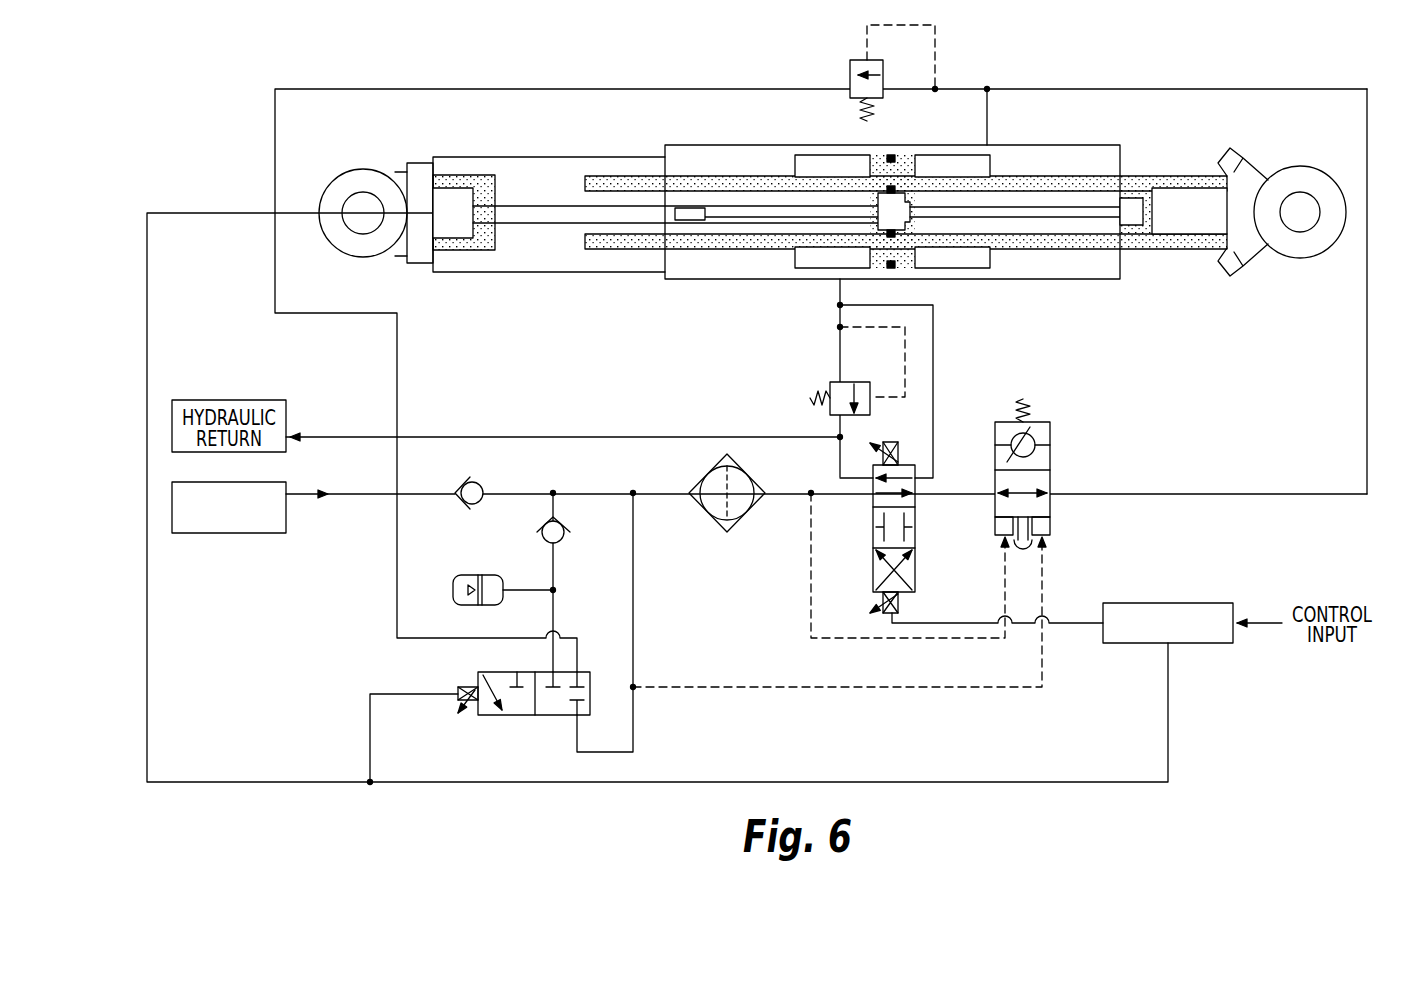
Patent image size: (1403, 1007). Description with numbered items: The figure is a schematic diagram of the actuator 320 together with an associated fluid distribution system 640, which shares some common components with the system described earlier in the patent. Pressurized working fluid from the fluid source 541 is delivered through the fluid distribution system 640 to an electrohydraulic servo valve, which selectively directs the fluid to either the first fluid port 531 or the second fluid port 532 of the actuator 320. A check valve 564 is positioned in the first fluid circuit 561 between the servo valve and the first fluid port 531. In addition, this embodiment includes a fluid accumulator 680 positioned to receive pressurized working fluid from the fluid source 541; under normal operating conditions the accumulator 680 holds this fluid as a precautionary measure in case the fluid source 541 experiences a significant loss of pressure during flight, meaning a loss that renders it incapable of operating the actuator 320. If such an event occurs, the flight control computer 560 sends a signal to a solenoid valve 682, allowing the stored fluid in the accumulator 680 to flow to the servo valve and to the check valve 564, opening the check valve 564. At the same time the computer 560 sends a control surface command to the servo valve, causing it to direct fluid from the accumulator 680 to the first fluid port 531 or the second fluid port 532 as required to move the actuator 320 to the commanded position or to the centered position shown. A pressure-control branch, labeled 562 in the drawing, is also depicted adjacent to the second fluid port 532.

The actuator 320 is at (1085, 143).
The first fluid port 531 is at (1001, 140).
The second fluid port 532 is at (838, 282).
The fluid source 541 is at (232, 533).
The flight control computer 560 is at (1210, 645).
The first fluid circuit 561 is at (1175, 492).
The pressure reducing valve circuit 562 is at (933, 363).
The check valve 564 is at (1052, 433).
The fluid distribution system 640 is at (363, 610).
The fluid accumulator 680 is at (487, 575).
The solenoid valve 682 is at (490, 717).